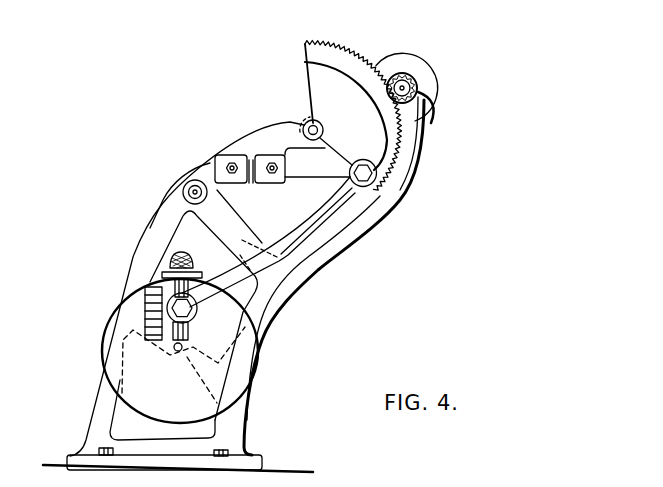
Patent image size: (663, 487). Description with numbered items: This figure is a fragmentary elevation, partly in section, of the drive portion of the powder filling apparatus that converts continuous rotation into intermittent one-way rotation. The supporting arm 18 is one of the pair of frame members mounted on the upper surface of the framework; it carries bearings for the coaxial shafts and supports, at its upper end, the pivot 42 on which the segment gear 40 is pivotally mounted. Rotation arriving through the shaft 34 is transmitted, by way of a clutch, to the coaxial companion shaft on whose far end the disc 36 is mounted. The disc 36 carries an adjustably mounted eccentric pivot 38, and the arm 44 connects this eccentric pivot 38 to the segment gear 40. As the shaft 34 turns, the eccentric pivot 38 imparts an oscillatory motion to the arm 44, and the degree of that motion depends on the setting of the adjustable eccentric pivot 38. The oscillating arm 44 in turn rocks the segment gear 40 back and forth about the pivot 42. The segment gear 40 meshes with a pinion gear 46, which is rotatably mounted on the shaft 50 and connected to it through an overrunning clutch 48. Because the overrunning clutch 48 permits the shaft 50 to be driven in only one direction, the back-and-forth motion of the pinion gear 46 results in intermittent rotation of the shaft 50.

The supporting arm 18 is at (313, 253).
The shaft 34 is at (181, 352).
The disc 36 is at (120, 327).
The eccentric pivot 38 is at (187, 308).
The segment gear 40 is at (318, 77).
The pivot 42 is at (309, 122).
The arm 44 is at (320, 214).
The pinion gear 46 is at (420, 93).
The overrunning clutch 48 is at (431, 68).
The shaft 50 is at (400, 73).